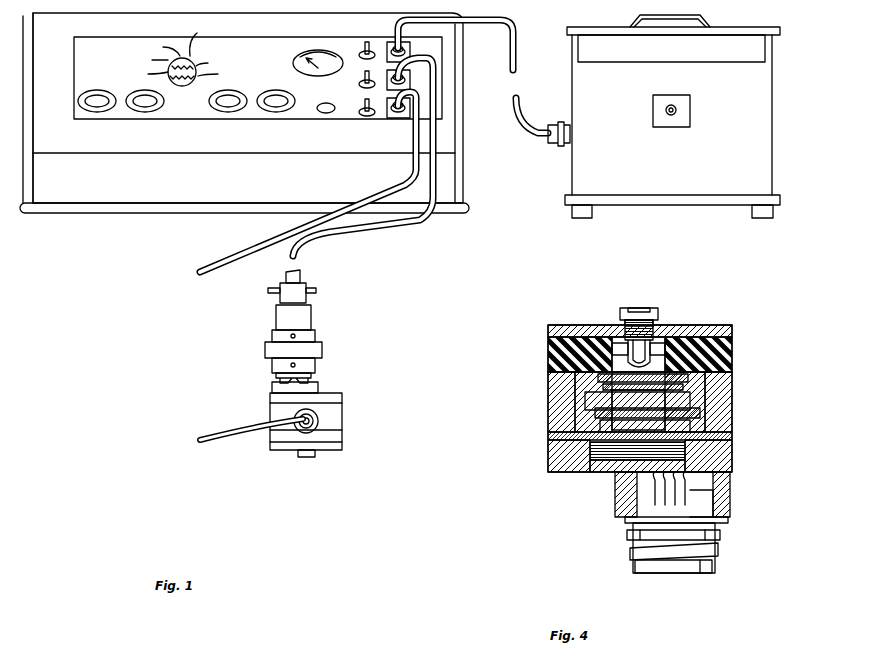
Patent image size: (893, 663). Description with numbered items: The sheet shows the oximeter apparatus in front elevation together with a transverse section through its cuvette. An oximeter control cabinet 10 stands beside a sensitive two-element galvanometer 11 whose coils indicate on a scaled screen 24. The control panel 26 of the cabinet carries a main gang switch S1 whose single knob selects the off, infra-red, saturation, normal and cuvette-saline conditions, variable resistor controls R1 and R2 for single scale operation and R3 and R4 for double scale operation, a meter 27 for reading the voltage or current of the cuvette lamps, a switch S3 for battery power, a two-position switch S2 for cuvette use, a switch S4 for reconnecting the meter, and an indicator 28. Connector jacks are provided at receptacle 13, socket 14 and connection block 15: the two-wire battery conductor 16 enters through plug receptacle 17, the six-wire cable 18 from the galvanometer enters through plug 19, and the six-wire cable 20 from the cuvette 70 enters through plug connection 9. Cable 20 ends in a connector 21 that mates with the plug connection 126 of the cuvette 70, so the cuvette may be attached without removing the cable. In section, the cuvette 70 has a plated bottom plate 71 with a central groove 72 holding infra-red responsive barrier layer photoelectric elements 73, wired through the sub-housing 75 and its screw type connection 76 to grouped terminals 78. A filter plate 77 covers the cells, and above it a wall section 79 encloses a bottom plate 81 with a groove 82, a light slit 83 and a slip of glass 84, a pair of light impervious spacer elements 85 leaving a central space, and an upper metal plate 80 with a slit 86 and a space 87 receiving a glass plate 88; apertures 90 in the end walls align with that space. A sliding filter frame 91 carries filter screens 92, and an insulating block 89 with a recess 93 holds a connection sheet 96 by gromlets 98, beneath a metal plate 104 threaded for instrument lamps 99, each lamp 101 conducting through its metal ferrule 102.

In FIG. 1, the oximeter control cabinet 10 is at (378, 18).
In FIG. 1, the two-element galvanometer 11 is at (753, 25).
In FIG. 1, the plug connection 9 is at (422, 66).
In FIG. 1, the receptacle 13 is at (411, 47).
In FIG. 1, the socket 14 is at (410, 80).
In FIG. 1, the connection block 15 is at (388, 116).
In FIG. 1, the battery conductor 16 is at (237, 246).
In FIG. 1, the plug receptacle 17 is at (398, 119).
In FIG. 1, the six-wire cable 18 is at (507, 58).
In FIG. 1, the plug 19 is at (384, 24).
In FIG. 1, the six-wire cable 20 is at (332, 236).
In FIG. 1, the connector 21 is at (312, 333).
In FIG. 1, the screen 24 is at (600, 40).
In FIG. 1, the control panel 26 is at (263, 49).
In FIG. 1, the meter 27 is at (308, 50).
In FIG. 1, the indicator lamp 28 is at (324, 114).
In FIG. 1, the cuvette 70 is at (355, 410).
In FIG. 4, the cuvette 70 is at (745, 331).
In FIG. 4, the bottom plate 71 is at (563, 472).
In FIG. 4, the central groove 72 is at (590, 472).
In FIG. 4, the barrier layer photoelectric elements 73 is at (620, 465).
In FIG. 4, the sub-housing 75 is at (730, 500).
In FIG. 4, the screw type connection 76 is at (720, 556).
In FIG. 4, the filter plate 77 is at (735, 436).
In FIG. 4, the terminals 78 is at (660, 508).
In FIG. 4, the wall section 79 is at (725, 410).
In FIG. 4, the metal plate 80 is at (585, 400).
In FIG. 4, the plate 81 is at (600, 434).
In FIG. 4, the central groove 82 is at (700, 420).
In FIG. 4, the light slit 83 is at (560, 462).
In FIG. 4, the slip of glass 84 is at (600, 445).
In FIG. 4, the spacer elements 85 is at (575, 415).
In FIG. 4, the slit 86 is at (735, 378).
In FIG. 4, the space 87 is at (592, 345).
In FIG. 4, the glass plate 88 is at (612, 350).
In FIG. 4, the insulating block 89 is at (730, 362).
In FIG. 4, the apertures 90 is at (700, 388).
In FIG. 4, the filter frame 91 is at (562, 378).
In FIG. 4, the filter screens 92 is at (660, 368).
In FIG. 4, the recess 93 is at (700, 330).
In FIG. 4, the connection sheet 96 is at (628, 345).
In FIG. 4, the gromlets 98 is at (650, 345).
In FIG. 4, the instrument type electric lamps 99 is at (655, 320).
In FIG. 4, the lamp 101 is at (635, 312).
In FIG. 1, the metal ferrule 102 is at (300, 457).
In FIG. 4, the metal ferrule 102 is at (645, 308).
In FIG. 4, the metal plate 104 is at (558, 325).
In FIG. 1, the plug connection 126 is at (275, 363).
In FIG. 1, the main control gang switch S1 is at (183, 84).
In FIG. 1, the switch S2 is at (359, 84).
In FIG. 1, the switch S3 is at (359, 114).
In FIG. 1, the switch S4 is at (361, 50).
In FIG. 1, the variable resistor control R1 is at (99, 105).
In FIG. 1, the variable resistor control R2 is at (146, 105).
In FIG. 1, the variable resistor control R3 is at (226, 105).
In FIG. 1, the variable resistor control R4 is at (275, 105).